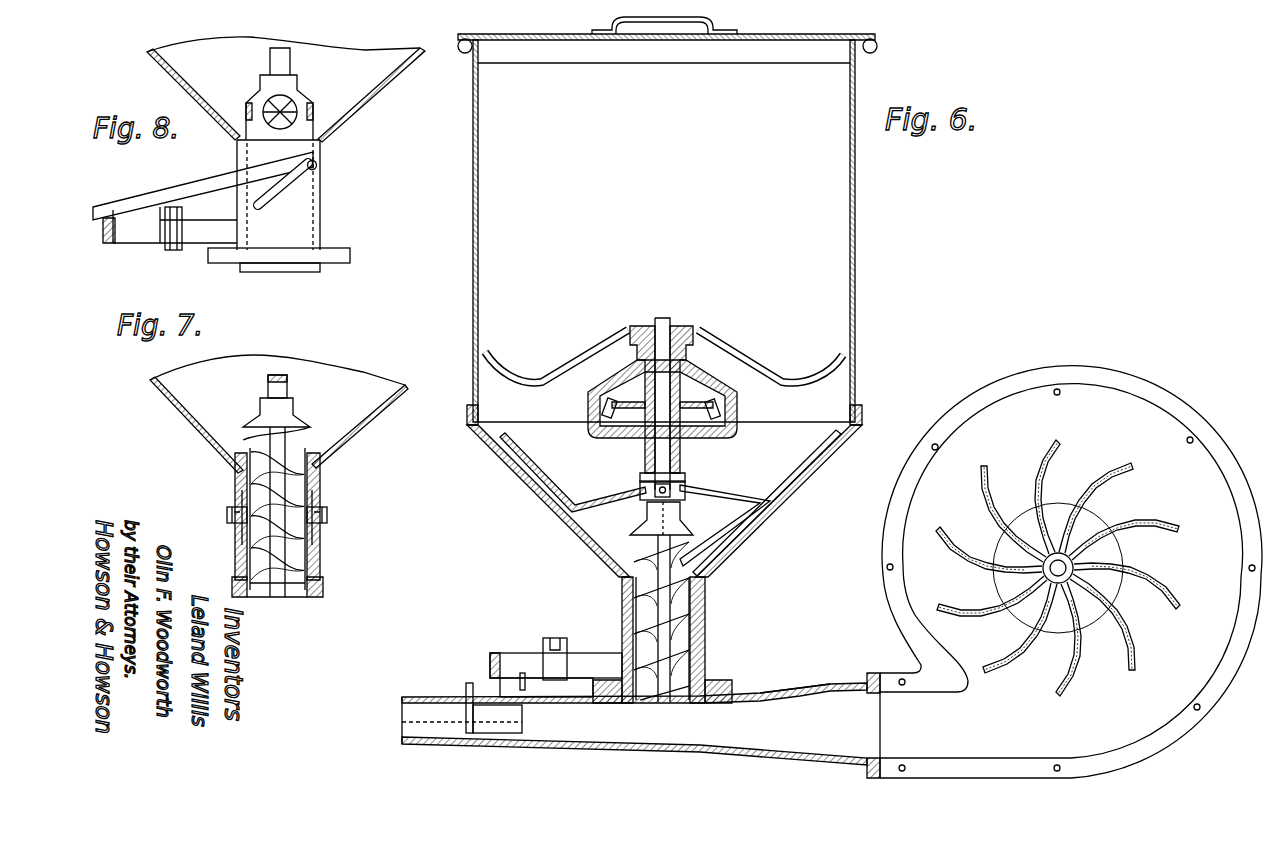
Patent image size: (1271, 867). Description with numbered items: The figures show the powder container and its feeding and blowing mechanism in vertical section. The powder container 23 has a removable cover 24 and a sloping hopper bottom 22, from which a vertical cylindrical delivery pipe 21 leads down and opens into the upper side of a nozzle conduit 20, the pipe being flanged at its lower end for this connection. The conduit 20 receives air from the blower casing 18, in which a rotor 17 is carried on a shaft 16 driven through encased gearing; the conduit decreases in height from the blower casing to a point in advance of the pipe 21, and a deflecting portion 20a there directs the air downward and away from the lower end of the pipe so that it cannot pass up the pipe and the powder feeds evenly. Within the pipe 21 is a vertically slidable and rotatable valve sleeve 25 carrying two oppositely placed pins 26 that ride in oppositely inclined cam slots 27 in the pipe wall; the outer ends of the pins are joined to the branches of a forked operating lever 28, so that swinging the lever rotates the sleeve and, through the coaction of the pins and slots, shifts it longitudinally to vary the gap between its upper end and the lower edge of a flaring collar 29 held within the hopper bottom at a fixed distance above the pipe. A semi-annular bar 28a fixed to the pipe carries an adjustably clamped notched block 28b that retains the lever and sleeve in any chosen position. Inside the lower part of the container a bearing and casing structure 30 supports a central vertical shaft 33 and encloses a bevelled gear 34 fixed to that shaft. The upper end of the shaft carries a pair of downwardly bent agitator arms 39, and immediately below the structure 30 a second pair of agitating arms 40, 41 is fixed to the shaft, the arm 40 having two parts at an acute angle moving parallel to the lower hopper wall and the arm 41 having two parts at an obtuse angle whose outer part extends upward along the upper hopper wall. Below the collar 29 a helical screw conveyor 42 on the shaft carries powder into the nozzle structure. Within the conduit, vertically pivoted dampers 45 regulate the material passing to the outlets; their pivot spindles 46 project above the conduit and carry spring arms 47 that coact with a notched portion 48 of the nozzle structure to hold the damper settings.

In FIG. 6, the shaft 16 is at (1065, 575).
In FIG. 6, the rotor 17 is at (1140, 525).
In FIG. 6, the blower casing 18 is at (1195, 430).
In FIG. 6, the nozzle conduit 20 is at (690, 745).
In FIG. 6, the deflecting portion 20a is at (790, 675).
In FIG. 7, the delivery pipe 21 is at (320, 558).
In FIG. 6, the delivery pipe 21 is at (706, 605).
In FIG. 8, the hopper bottom 22 is at (383, 91).
In FIG. 7, the hopper bottom 22 is at (368, 432).
In FIG. 6, the hopper bottom 22 is at (780, 500).
In FIG. 6, the powder container 23 is at (857, 192).
In FIG. 6, the cover 24 is at (840, 38).
In FIG. 8, the valve sleeve 25 is at (316, 123).
In FIG. 7, the valve sleeve 25 is at (318, 460).
In FIG. 6, the valve sleeve 25 is at (620, 618).
In FIG. 8, the pins 26 is at (318, 165).
In FIG. 7, the pins 26 is at (236, 516).
In FIG. 8, the cam slots 27 is at (285, 190).
In FIG. 7, the cam slots 27 is at (242, 530).
In FIG. 8, the forked operating lever 28 is at (203, 186).
In FIG. 7, the forked operating lever 28 is at (228, 510).
In FIG. 8, the semi-annular bar 28a is at (115, 238).
In FIG. 6, the semi-annular bar 28a is at (493, 645).
In FIG. 8, the notched block 28b is at (172, 250).
In FIG. 6, the notched block 28b is at (558, 638).
In FIG. 8, the flaring collar 29 is at (298, 95).
In FIG. 7, the flaring collar 29 is at (297, 420).
In FIG. 6, the flaring collar 29 is at (632, 520).
In FIG. 6, the bearing and casing structure 30 is at (684, 452).
In FIG. 7, the vertical shaft 33 is at (285, 388).
In FIG. 6, the vertical shaft 33 is at (672, 305).
In FIG. 6, the bevelled gear 34 is at (735, 410).
In FIG. 6, the agitator arms 39 is at (725, 350).
In FIG. 6, the agitating arm 40 is at (740, 485).
In FIG. 6, the agitating arm 41 is at (583, 497).
In FIG. 7, the screw conveyor 42 is at (293, 586).
In FIG. 6, the screw conveyor 42 is at (706, 635).
In FIG. 6, the dampers 45 is at (522, 728).
In FIG. 6, the pivot spindles 46 is at (468, 683).
In FIG. 6, the spring arms 47 is at (522, 673).
In FIG. 6, the notched portion 48 is at (542, 682).